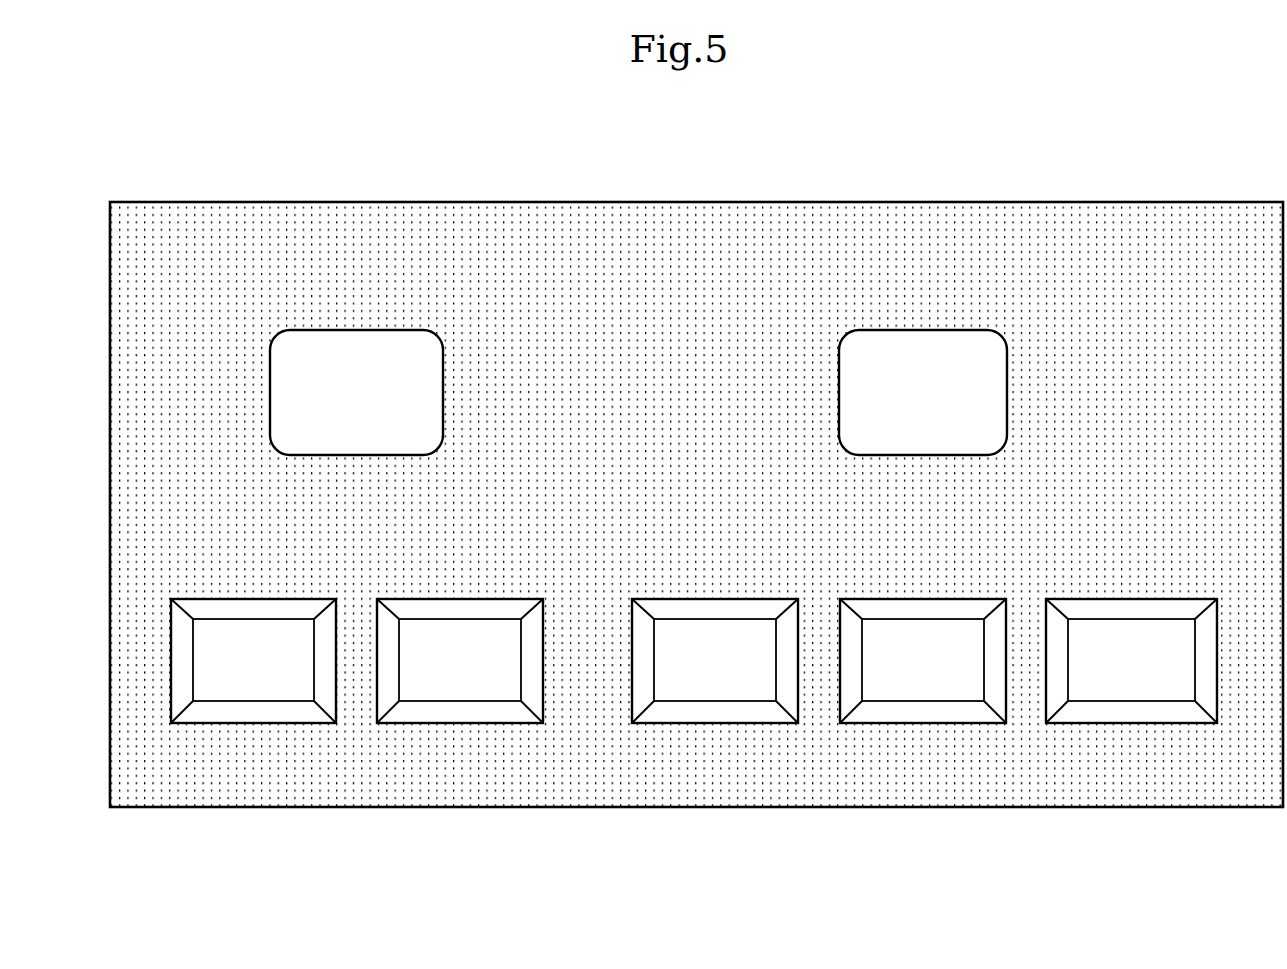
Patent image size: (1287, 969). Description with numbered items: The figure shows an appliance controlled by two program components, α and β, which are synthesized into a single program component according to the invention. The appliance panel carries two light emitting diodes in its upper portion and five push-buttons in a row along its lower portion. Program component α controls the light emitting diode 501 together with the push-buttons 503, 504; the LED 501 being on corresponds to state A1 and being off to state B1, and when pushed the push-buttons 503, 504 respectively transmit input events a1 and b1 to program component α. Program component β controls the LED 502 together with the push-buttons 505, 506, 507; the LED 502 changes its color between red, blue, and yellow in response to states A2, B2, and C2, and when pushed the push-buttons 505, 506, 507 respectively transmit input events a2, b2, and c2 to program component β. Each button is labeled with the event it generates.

The light emitting diode 501 is at (352, 330).
The LED 502 is at (927, 330).
The push-button 503 is at (250, 724).
The push-button 504 is at (457, 724).
The push-button 505 is at (710, 724).
The push-button 506 is at (919, 724).
The push-button 507 is at (1131, 724).